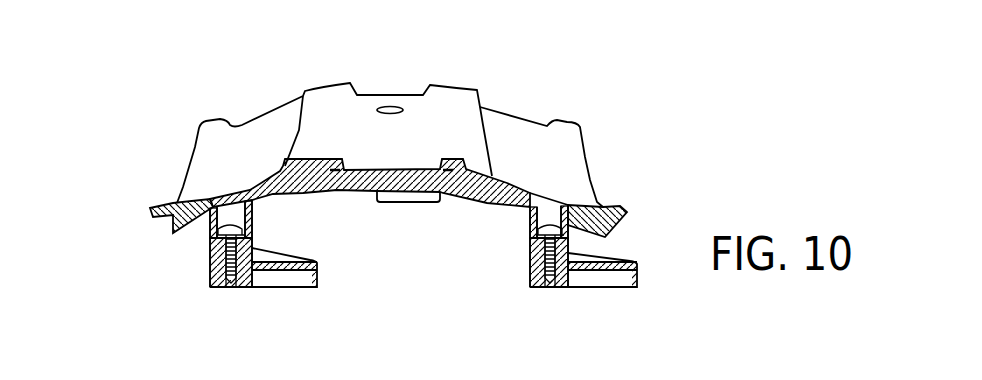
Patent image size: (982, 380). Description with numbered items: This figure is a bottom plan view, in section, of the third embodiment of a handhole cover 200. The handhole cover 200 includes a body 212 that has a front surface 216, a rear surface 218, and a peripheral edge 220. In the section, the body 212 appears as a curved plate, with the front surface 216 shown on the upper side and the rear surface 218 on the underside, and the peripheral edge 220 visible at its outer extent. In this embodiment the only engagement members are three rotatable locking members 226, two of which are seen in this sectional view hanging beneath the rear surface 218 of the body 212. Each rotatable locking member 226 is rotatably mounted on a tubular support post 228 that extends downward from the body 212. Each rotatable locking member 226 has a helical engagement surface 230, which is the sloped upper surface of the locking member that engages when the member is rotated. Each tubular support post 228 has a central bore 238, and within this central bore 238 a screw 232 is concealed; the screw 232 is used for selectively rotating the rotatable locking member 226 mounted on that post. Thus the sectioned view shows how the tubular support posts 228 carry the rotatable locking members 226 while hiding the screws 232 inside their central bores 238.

The handhole cover 200 is at (655, 112).
The body 212 is at (468, 120).
The front surface 216 is at (332, 85).
The rear surface 218 is at (473, 203).
The peripheral edge 220 is at (153, 213).
The rotatable locking member 226 is at (403, 202).
The tubular support post 228 is at (210, 237).
The helical engagement surface 230 is at (283, 253).
The screw 232 is at (555, 287).
The central bore 238 is at (550, 207).